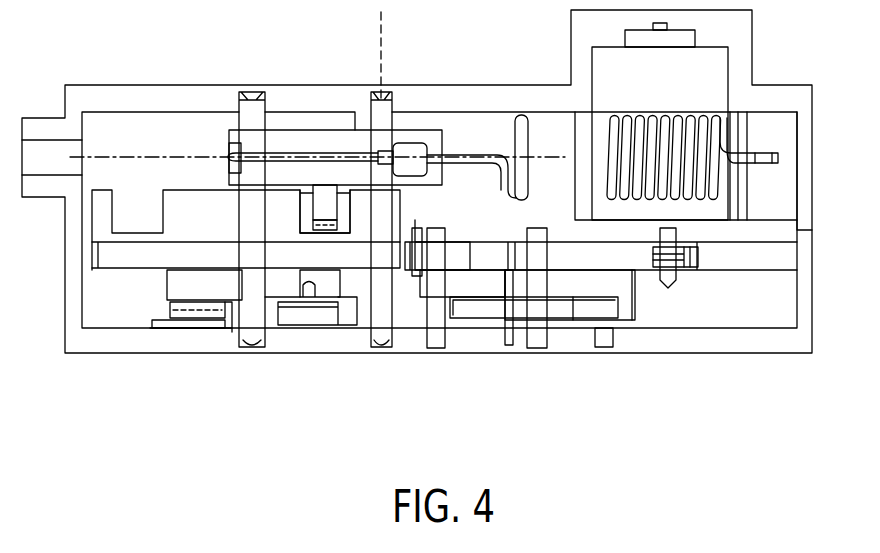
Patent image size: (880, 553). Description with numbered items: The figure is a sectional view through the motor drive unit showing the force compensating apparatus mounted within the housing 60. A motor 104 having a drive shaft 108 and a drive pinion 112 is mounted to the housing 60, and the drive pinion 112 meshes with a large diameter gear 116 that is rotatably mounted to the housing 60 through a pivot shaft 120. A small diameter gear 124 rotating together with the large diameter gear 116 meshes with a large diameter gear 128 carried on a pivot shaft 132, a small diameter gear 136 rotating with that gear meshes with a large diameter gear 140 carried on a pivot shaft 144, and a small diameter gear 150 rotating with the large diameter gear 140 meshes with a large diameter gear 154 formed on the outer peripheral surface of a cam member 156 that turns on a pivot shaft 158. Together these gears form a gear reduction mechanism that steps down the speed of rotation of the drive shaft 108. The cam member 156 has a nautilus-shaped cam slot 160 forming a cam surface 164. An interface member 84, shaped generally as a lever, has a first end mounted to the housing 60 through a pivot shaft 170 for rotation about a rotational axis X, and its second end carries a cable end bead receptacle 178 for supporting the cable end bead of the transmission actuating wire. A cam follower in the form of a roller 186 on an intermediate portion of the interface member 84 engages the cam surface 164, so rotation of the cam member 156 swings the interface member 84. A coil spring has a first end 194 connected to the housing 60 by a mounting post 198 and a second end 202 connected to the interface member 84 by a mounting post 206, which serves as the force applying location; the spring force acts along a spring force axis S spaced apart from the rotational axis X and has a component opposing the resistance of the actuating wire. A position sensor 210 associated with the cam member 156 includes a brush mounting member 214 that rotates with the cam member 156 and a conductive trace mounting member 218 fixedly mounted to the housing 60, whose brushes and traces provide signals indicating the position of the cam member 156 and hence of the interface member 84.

The housing 60 is at (813, 135).
The interface member 84 is at (322, 143).
The motor 104 is at (712, 80).
The drive shaft 108 is at (663, 258).
The drive pinion 112 is at (700, 268).
The large diameter gear 116 is at (560, 252).
The pivot shaft 120 is at (608, 337).
The small diameter gear 124 is at (638, 298).
The large diameter gear 128 is at (587, 308).
The pivot shaft 132 is at (533, 342).
The small diameter gear 136 is at (522, 285).
The large diameter gear 140 is at (471, 282).
The pivot shaft 144 is at (435, 342).
The small diameter gear 150 is at (418, 265).
The large diameter gear 154 is at (395, 258).
The cam member 156 is at (110, 257).
The pivot shaft 158 is at (252, 330).
The cam slot 160 is at (130, 202).
The cam surface 164 is at (113, 230).
The pivot shaft 170 is at (385, 105).
The cable end bead receptacle 178 is at (415, 148).
The roller 186 is at (308, 204).
The first end 194 is at (753, 152).
The mounting post 198 is at (763, 188).
The second end 202 is at (228, 157).
The mounting post 206 is at (248, 142).
The position sensor 210 is at (192, 337).
The brush mounting member 214 is at (180, 283).
The conductive trace mounting member 218 is at (172, 312).
The rotational axis X is at (383, 40).
The spring force axis S is at (552, 157).